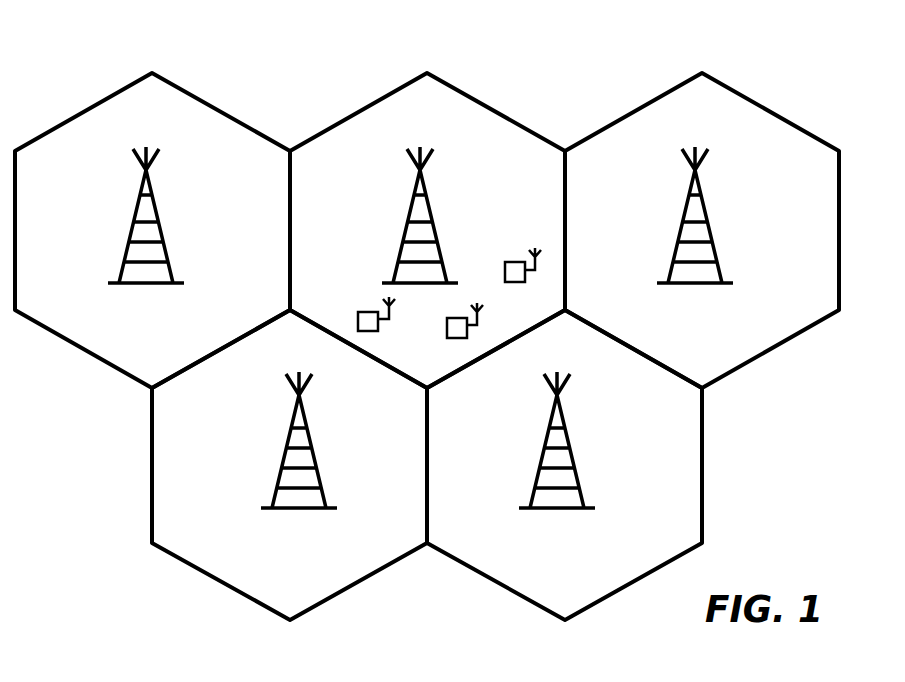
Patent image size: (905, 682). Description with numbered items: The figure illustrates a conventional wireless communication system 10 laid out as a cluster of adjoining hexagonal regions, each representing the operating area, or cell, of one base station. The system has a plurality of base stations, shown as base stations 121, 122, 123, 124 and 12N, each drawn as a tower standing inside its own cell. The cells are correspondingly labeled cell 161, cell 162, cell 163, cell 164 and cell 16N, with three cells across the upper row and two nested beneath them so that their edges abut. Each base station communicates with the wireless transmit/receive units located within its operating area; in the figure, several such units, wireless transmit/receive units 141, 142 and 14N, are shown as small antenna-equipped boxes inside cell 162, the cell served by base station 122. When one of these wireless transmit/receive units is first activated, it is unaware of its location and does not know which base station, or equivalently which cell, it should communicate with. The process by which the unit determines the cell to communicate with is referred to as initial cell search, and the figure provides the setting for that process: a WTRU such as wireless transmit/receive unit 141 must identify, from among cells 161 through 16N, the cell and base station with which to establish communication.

The wireless communication system 10 is at (63, 30).
The base station 121 is at (135, 212).
The base station 122 is at (409, 212).
The base station 123 is at (684, 213).
The base station 124 is at (305, 418).
The base station 12N is at (572, 440).
The wireless transmit/receive unit 141 is at (366, 332).
The wireless transmit/receive unit 142 is at (458, 318).
The wireless transmit/receive unit 14N is at (514, 262).
The cell 161 is at (82, 314).
The cell 162 is at (338, 312).
The cell 163 is at (618, 314).
The cell 164 is at (203, 547).
The cell 16N is at (482, 547).